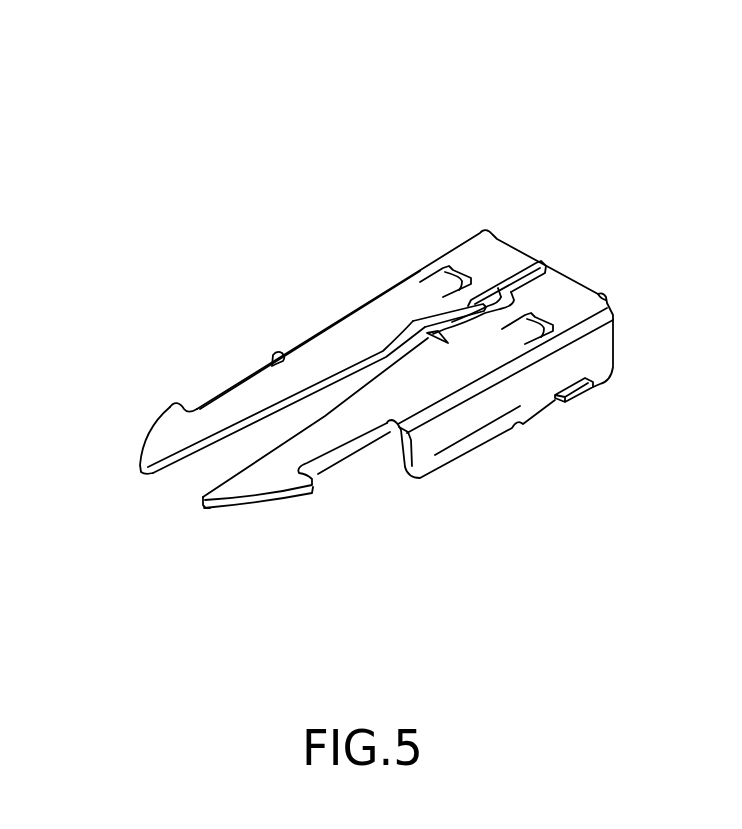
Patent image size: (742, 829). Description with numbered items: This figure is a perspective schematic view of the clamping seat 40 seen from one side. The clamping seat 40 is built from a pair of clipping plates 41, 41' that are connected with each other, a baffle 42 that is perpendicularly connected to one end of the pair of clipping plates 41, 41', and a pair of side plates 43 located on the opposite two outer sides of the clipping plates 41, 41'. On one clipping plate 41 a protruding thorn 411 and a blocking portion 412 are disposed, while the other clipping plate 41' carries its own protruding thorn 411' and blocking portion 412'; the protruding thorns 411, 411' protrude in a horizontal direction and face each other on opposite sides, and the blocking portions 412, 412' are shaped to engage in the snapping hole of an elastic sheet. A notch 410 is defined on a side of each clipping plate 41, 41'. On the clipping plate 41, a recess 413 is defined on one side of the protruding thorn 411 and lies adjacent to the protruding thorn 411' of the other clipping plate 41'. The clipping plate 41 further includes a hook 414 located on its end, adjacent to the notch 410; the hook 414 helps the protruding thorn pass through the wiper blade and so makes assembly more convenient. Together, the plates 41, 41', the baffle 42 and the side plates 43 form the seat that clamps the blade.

The clamping seat 40 is at (280, 134).
The clipping plate 41 is at (286, 372).
The clipping plate 41' is at (325, 447).
The baffle 42 is at (567, 272).
The side plate 43 is at (520, 406).
The notch 410 is at (212, 393).
The protruding thorn 411 is at (515, 239).
The protruding thorn 411' is at (472, 399).
The blocking portion 412 is at (424, 237).
The blocking portion 412' is at (593, 373).
The recess 413 is at (413, 320).
The hook 414 is at (165, 428).